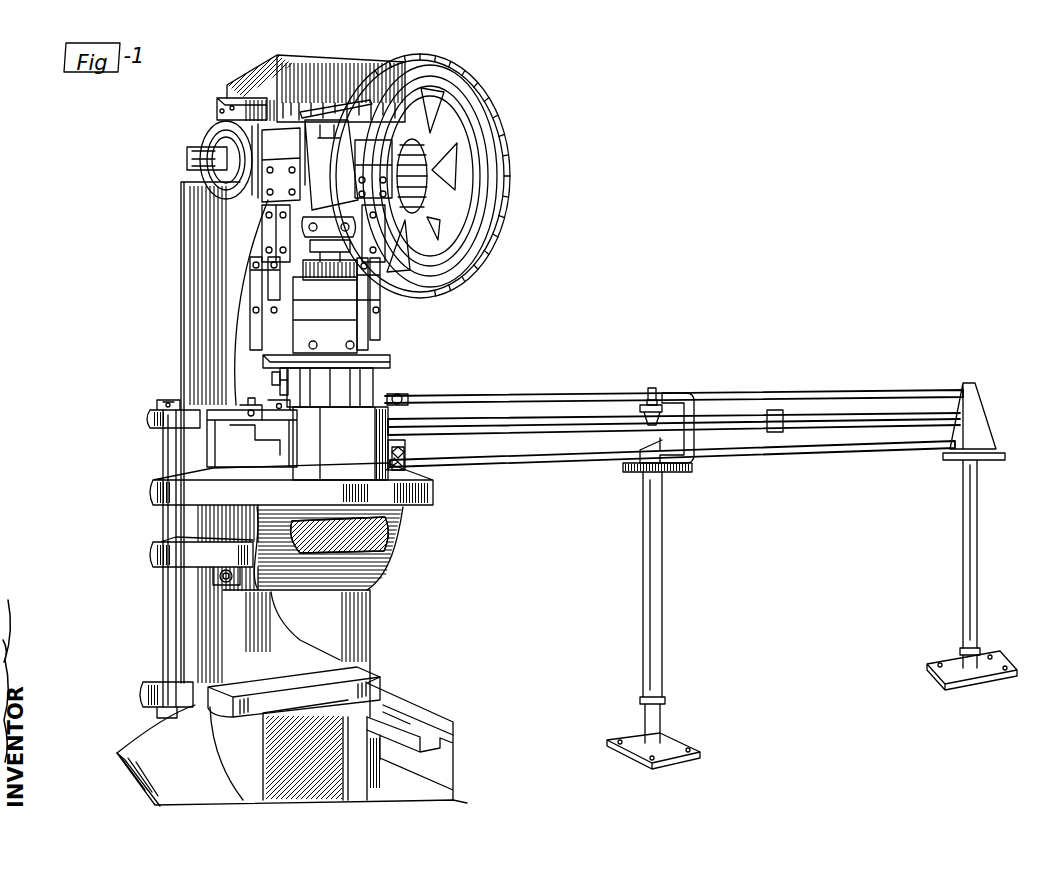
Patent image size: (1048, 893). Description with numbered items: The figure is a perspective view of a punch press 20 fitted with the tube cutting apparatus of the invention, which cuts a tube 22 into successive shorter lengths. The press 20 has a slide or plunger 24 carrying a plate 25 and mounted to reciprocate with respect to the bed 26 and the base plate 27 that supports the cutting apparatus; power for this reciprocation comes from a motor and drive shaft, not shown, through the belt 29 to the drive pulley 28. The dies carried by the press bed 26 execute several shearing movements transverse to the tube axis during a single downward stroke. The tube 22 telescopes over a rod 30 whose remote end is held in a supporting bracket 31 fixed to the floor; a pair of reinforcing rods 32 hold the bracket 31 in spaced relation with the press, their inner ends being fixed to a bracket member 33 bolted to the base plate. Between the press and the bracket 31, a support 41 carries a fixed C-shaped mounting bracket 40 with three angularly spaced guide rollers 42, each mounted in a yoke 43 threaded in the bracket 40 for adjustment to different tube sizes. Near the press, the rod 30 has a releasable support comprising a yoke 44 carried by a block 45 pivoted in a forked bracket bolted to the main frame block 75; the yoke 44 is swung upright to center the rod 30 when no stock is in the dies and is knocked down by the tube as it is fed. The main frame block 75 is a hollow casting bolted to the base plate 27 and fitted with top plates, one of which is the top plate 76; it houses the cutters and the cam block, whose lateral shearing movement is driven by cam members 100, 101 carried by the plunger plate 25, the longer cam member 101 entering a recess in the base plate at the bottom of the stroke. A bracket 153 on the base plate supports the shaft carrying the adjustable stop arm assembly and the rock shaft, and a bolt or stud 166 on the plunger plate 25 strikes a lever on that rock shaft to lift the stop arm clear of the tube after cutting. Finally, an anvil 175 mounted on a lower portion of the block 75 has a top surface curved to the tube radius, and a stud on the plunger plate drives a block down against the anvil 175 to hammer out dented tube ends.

The punch press 20 is at (160, 246).
The tube 22 is at (495, 427).
The slide or plunger 24 is at (343, 300).
The plate 25 is at (385, 365).
The bed 26 is at (240, 518).
The base plate 27 is at (210, 471).
The drive pulley 28 is at (503, 195).
The belt 29 is at (477, 118).
The rod 30 is at (872, 415).
The supporting bracket 31 is at (985, 430).
The reinforcing rods 32 is at (772, 395).
The bracket member 33 is at (397, 393).
The mounting bracket 40 is at (680, 395).
The support 41 is at (655, 590).
The guide rollers 42 is at (650, 415).
The yoke 43 is at (650, 400).
The yoke 44 is at (402, 454).
The block 45 is at (400, 470).
The main frame block 75 is at (352, 453).
The top plate 76 is at (283, 463).
The cam member 100 is at (286, 394).
The cam member 101 is at (345, 385).
The bracket 153 is at (205, 407).
The bolt or stud 166 is at (275, 377).
The anvil 175 is at (283, 455).